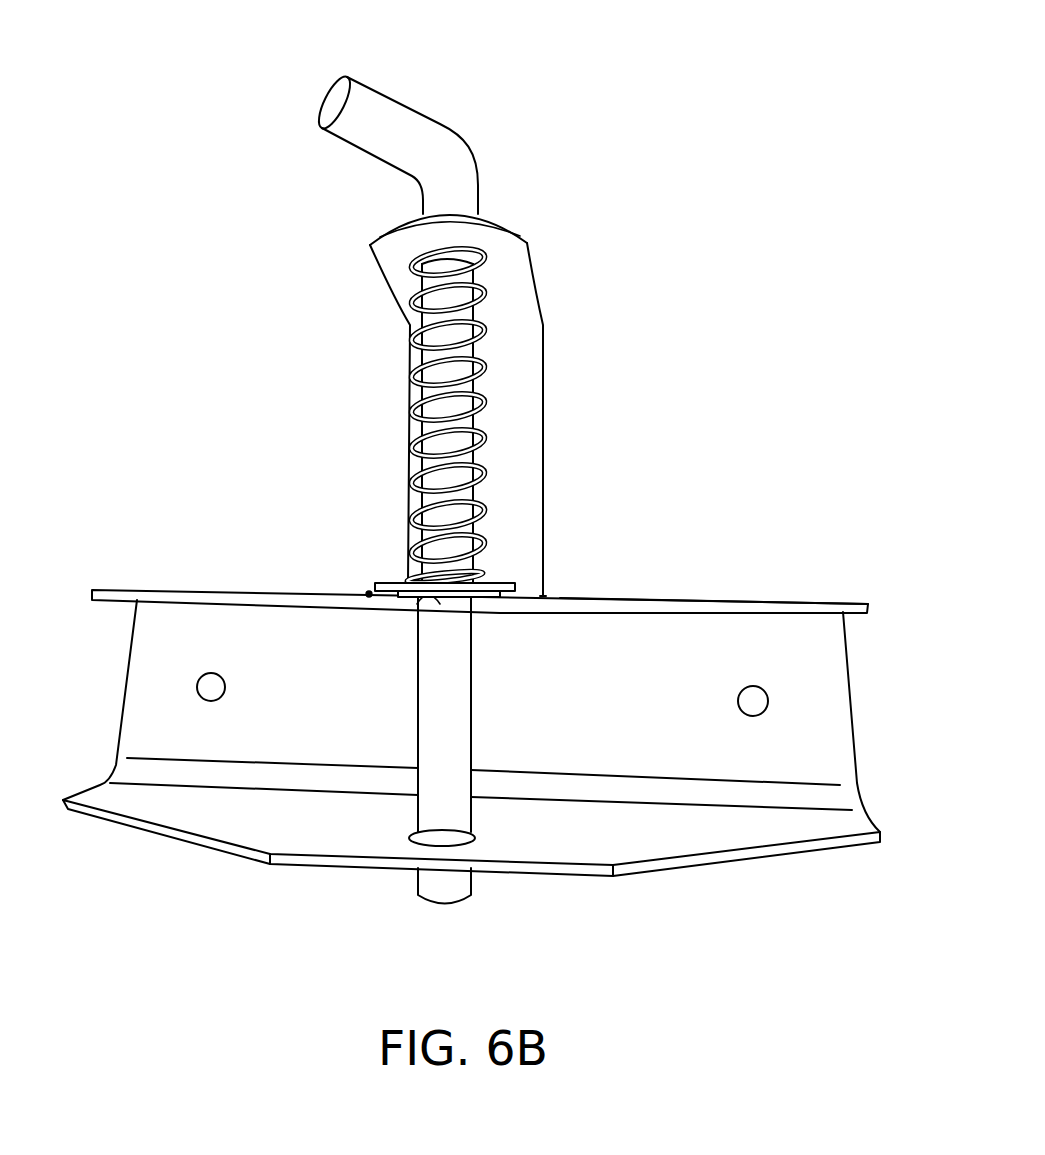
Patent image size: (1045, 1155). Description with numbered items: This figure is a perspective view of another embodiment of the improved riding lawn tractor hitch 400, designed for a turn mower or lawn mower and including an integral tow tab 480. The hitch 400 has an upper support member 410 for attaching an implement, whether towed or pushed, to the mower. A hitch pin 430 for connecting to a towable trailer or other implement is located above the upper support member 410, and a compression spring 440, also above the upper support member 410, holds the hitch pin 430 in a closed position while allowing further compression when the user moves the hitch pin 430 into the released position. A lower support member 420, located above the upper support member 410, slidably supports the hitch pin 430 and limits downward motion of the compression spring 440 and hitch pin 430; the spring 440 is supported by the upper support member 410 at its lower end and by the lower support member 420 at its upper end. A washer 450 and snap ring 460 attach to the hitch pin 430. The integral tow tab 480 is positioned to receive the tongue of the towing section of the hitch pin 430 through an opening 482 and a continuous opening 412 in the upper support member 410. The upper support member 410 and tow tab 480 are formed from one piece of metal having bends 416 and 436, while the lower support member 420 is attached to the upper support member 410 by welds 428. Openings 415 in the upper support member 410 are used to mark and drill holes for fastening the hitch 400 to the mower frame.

The riding lawn tractor hitch 400 is at (814, 534).
The upper support member 410 is at (317, 591).
The continuous opening 412 is at (416, 594).
The openings 415 is at (191, 684).
The bend 416 is at (702, 600).
The lower support member 420 is at (517, 457).
The welds 428 is at (547, 597).
The hitch pin 430 is at (397, 113).
The bend 436 is at (858, 778).
The compression spring 440 is at (410, 412).
The washer 450 is at (507, 583).
The snap ring 460 is at (369, 593).
The integral tow tab 480 is at (583, 858).
The opening 482 is at (421, 838).